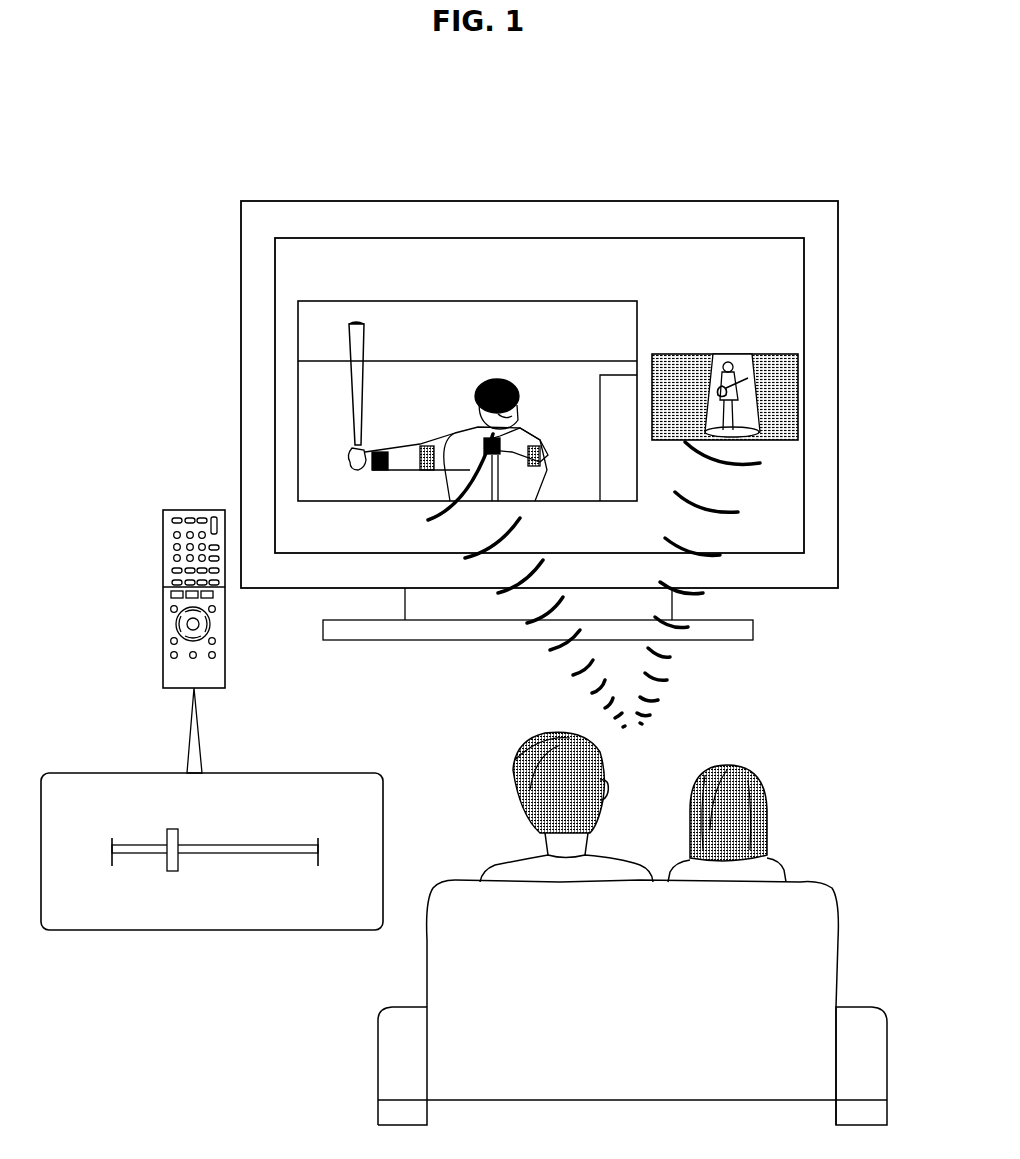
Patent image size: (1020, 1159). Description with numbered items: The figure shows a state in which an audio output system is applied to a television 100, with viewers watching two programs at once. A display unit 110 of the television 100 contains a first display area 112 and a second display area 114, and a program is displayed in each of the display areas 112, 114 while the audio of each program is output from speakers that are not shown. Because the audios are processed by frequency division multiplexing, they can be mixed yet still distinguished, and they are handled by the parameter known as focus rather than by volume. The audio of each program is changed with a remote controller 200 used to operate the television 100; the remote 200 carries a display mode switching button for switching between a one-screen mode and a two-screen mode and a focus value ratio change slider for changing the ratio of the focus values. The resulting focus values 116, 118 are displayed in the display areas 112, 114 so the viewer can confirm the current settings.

The television 100 is at (537, 202).
The display unit 110 is at (298, 272).
The first display area 112 is at (296, 378).
The second display area 114 is at (656, 352).
The focus value display 116 is at (468, 248).
The focus value display 118 is at (725, 248).
The remote controller 200 is at (228, 656).